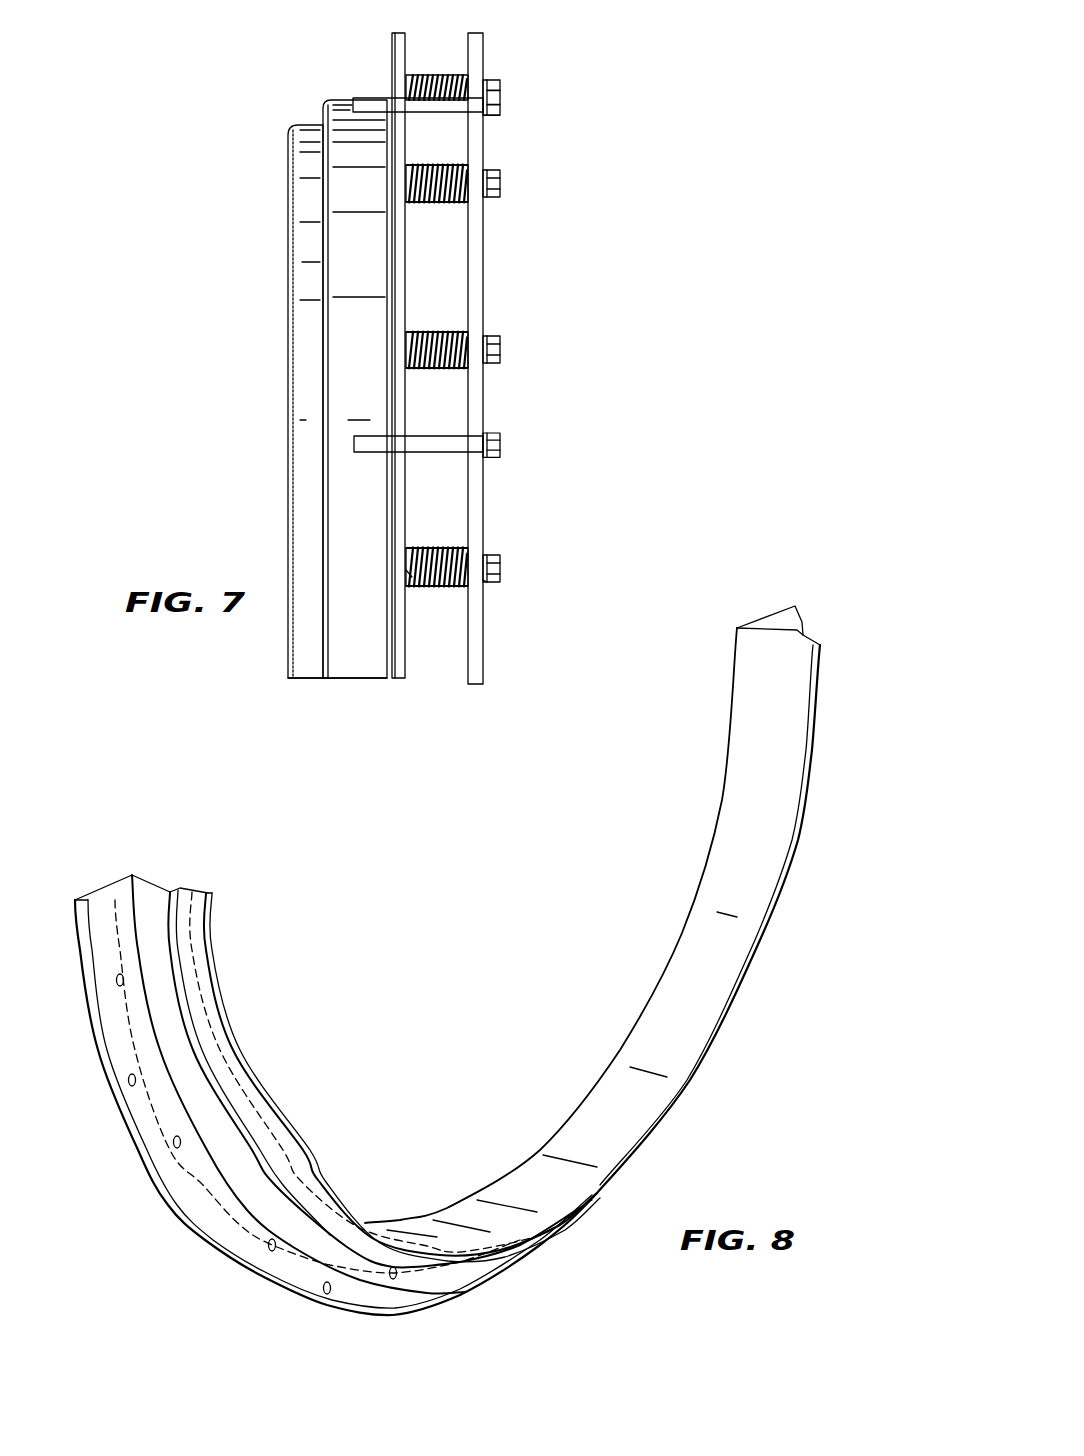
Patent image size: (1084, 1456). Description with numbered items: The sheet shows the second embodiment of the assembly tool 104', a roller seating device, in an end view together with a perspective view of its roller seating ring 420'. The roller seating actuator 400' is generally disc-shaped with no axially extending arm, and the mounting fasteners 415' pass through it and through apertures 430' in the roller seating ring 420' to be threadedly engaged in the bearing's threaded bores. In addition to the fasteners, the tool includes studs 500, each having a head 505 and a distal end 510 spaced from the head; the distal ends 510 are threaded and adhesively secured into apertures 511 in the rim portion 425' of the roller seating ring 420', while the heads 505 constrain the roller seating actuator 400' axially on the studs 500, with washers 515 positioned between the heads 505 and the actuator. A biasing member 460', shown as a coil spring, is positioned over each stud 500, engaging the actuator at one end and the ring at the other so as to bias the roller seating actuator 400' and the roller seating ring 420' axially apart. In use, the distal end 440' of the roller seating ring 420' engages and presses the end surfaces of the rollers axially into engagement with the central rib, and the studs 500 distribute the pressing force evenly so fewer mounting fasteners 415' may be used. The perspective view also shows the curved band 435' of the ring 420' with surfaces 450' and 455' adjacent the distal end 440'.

In FIG. 7, the assembly tool 104' is at (605, 92).
In FIG. 7, the roller seating actuator 400' is at (525, 345).
In FIG. 7, the mounting fasteners 415' is at (472, 425).
In FIG. 7, the roller seating ring 420' is at (297, 379).
In FIG. 8, the roller seating ring 420' is at (447, 960).
In FIG. 7, the rim portion 425' is at (352, 345).
In FIG. 8, the apertures 430' is at (209, 1155).
In FIG. 8, the band 435' is at (470, 945).
In FIG. 7, the distal end 440' is at (267, 401).
In FIG. 8, the distal end 440' is at (184, 940).
In FIG. 7, the web 450' is at (300, 389).
In FIG. 8, the web 450' is at (310, 1047).
In FIG. 7, the inner flange 455' is at (263, 268).
In FIG. 8, the inner flange 455' is at (380, 1044).
In FIG. 7, the biasing member 460' is at (497, 330).
In FIG. 7, the studs 500 is at (492, 167).
In FIG. 7, the head 505 is at (500, 563).
In FIG. 7, the distal end 510 is at (412, 577).
In FIG. 8, the apertures 511 is at (267, 1247).
In FIG. 7, the washers 515 is at (483, 582).